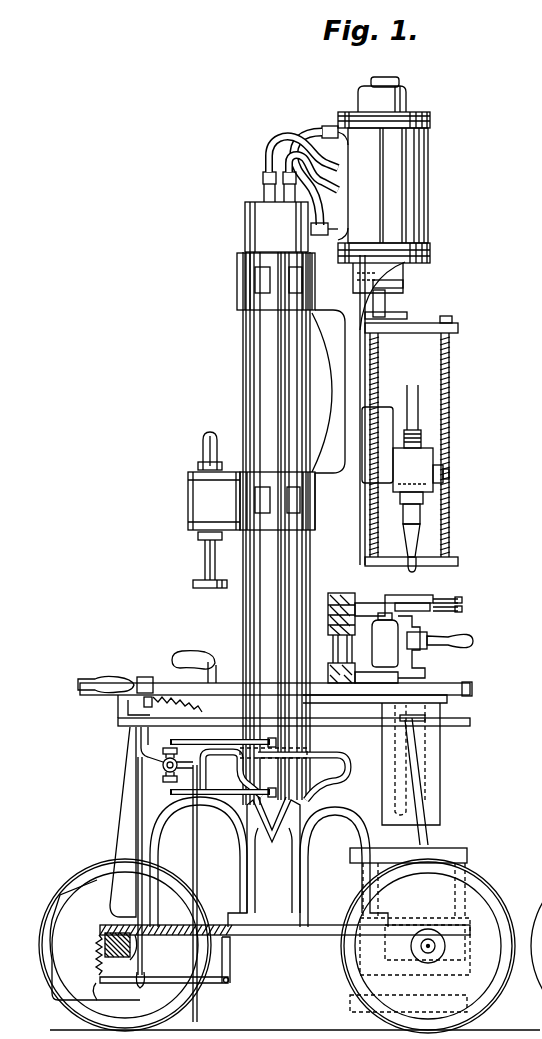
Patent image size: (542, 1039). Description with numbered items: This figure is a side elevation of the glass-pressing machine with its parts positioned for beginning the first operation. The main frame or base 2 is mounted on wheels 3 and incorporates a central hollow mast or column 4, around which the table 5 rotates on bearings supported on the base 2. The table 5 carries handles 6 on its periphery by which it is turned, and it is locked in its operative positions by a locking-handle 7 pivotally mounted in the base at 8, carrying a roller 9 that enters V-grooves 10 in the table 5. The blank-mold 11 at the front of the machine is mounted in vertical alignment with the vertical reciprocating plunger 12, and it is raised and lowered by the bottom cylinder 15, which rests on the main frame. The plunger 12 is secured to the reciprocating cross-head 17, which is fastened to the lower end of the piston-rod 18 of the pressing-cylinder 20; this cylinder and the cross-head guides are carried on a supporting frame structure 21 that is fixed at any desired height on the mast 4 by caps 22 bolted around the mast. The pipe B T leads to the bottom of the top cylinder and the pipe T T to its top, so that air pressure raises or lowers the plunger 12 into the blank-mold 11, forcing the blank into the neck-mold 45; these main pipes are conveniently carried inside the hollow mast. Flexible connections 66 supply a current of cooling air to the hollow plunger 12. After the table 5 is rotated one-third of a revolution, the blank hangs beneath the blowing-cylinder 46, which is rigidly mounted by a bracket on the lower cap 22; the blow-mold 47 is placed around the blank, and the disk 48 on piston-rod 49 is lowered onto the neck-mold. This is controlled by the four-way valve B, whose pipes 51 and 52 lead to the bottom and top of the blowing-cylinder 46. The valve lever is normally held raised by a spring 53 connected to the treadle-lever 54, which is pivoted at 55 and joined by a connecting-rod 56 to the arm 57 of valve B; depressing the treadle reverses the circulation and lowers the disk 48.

The pipe T T TT is at (318, 128).
The pipe B T BT is at (262, 168).
The pressing-cylinder 20 is at (384, 185).
The caps 22 is at (238, 274).
The supporting frame structure 21 is at (358, 410).
The piston-rod 18 is at (385, 298).
The connections 66 is at (412, 407).
The cross-head 17 is at (395, 462).
The plunger 12 is at (410, 536).
The blowing-cylinder 46 is at (214, 481).
The piston-rod 49 is at (203, 550).
The disk 48 is at (195, 583).
The neck-mold 45 is at (425, 596).
The blow-mold 47 is at (400, 657).
The V-grooves 10 is at (465, 683).
The table 5 is at (473, 689).
The mast or column 4 is at (283, 635).
The roller 9 is at (143, 677).
The locking-handle 7 is at (106, 679).
The pivot 8 is at (142, 708).
The handles 6 is at (182, 651).
The arm of valve B 57 is at (140, 742).
The four-way valve B is at (179, 762).
The pipe 51 is at (223, 767).
The pipe 52 is at (221, 797).
The main frame or base 2 is at (269, 832).
The blank-mold 11 is at (440, 766).
The connecting-rod 56 is at (137, 840).
The wheels 3 is at (72, 878).
The cylinder 15 is at (362, 872).
The spring 53 is at (96, 950).
The treadle-lever 54 is at (120, 977).
The pivot 55 is at (227, 984).